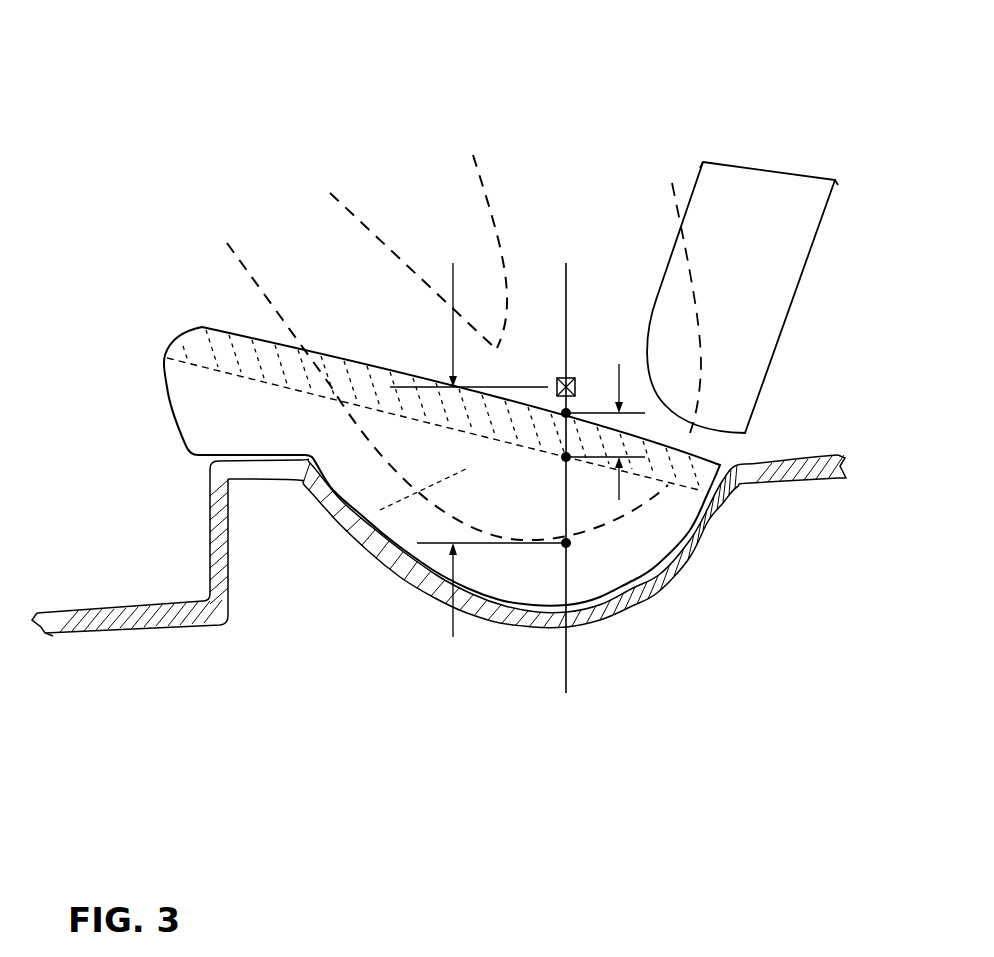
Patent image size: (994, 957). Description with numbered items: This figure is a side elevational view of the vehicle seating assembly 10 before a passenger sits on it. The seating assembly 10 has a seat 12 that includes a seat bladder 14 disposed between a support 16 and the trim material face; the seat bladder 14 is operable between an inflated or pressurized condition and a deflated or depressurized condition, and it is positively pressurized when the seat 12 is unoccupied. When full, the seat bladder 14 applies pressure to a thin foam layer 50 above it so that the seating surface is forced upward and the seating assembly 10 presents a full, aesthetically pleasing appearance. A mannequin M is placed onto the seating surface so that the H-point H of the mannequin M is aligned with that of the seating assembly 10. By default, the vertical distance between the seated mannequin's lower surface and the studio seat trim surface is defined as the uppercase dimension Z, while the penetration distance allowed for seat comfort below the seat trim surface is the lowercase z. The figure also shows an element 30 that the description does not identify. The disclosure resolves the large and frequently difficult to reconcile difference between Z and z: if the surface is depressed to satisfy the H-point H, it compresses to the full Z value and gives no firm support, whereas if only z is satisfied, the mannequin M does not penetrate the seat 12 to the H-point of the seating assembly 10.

The vehicle seating assembly 10 is at (569, 164).
The seat 12 is at (225, 337).
The seat bladder 14 is at (349, 548).
The support 16 is at (597, 610).
The occupant elbow 30 is at (732, 208).
The thin foam layer 50 is at (253, 350).
The mannequin M is at (483, 193).
The H-point H is at (571, 378).
The vertical distance Z is at (534, 506).